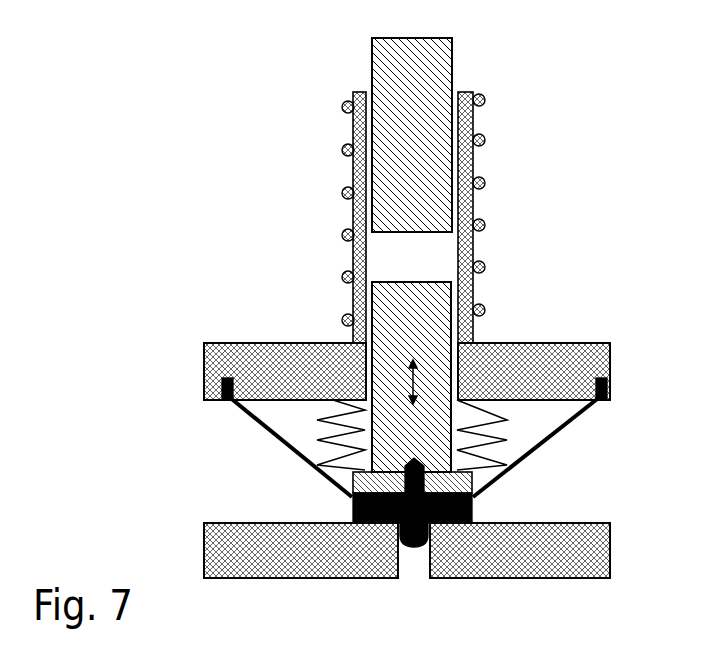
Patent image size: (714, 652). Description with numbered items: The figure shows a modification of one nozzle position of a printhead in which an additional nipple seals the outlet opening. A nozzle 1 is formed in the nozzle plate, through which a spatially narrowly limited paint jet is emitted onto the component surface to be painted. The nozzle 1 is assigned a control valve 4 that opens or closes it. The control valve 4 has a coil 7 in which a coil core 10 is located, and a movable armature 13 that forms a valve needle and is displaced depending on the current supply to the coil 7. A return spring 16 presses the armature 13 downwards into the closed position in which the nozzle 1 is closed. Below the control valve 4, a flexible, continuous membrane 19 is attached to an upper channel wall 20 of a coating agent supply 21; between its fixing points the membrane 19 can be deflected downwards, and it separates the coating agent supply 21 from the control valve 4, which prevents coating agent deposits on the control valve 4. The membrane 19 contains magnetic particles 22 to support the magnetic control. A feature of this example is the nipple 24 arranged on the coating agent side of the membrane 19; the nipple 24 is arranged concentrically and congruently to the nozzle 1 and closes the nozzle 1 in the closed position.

The nozzle 1 is at (422, 568).
The control valve 4 is at (258, 233).
The coil 7 is at (481, 140).
The coil core 10 is at (423, 73).
The movable armature 13 is at (427, 317).
The return spring 16 is at (490, 455).
The flexible continuous membrane 19 is at (575, 418).
The upper channel wall 20 is at (272, 365).
The coating agent supply 21 is at (246, 470).
The magnetic particles 22 is at (350, 510).
The nipple 24 is at (411, 548).